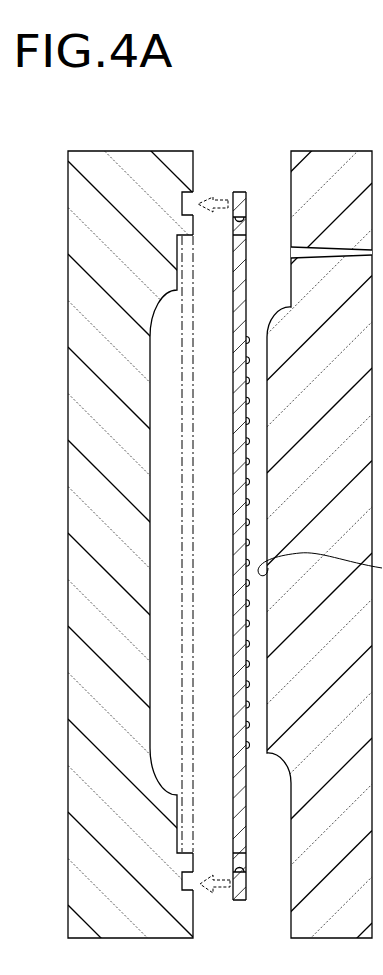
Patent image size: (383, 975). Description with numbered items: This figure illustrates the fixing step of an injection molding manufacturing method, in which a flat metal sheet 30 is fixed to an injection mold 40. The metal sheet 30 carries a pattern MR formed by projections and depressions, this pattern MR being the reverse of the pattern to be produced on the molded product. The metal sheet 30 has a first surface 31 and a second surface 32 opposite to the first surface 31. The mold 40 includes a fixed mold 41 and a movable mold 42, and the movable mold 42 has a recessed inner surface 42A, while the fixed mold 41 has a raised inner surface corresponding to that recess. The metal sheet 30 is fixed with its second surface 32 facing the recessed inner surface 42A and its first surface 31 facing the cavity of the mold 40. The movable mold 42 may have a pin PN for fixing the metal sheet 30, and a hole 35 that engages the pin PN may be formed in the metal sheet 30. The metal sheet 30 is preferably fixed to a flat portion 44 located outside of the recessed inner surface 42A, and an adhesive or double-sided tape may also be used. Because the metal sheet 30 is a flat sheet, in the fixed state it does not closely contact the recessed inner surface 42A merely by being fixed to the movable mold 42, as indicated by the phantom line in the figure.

The injection mold 40 is at (307, 83).
The fixed mold 41 is at (303, 151).
The movable mold 42 is at (163, 151).
The recessed inner surface 42A is at (150, 418).
The flat portion 44 is at (194, 203).
The metal sheet 30 is at (239, 186).
The first surface 31 is at (247, 280).
The second surface 32 is at (232, 292).
The hole 35 is at (246, 219).
The pin PN is at (193, 230).
The pattern MR is at (249, 667).